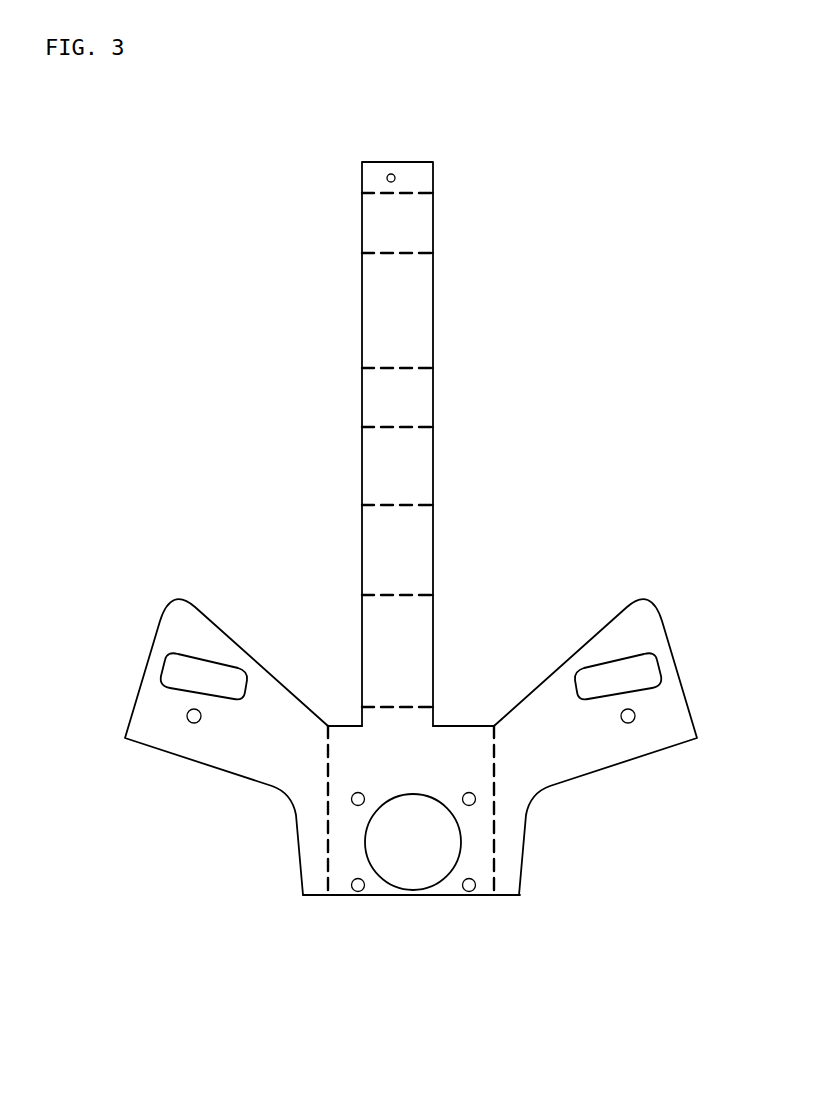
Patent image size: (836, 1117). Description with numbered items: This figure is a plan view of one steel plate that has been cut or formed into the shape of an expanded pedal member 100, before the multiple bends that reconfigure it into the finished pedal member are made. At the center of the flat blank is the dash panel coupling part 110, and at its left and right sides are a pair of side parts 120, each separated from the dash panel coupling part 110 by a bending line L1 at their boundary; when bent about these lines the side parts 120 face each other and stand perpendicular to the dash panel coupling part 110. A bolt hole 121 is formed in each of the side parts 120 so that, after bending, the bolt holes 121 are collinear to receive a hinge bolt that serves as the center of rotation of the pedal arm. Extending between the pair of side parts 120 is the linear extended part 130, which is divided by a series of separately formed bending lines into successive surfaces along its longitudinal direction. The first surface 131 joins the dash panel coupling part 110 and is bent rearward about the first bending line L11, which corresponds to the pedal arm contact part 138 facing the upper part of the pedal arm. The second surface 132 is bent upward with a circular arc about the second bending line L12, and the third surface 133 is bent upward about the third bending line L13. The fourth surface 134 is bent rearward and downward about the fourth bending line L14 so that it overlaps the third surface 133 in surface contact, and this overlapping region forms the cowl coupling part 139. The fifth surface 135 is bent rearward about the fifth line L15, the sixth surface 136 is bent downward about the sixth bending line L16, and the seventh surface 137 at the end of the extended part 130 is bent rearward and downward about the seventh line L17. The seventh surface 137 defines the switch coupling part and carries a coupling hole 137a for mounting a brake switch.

The pedal member 100 is at (238, 840).
The dash panel coupling part 110 is at (368, 897).
The side parts 120 is at (222, 752).
The bolt holes 121 is at (187, 713).
The extended part 130 is at (455, 265).
The first surface 131 is at (423, 635).
The second surface 132 is at (423, 552).
The third surface 133 is at (423, 472).
The fourth surface 134 is at (423, 400).
The fifth surface 135 is at (423, 320).
The sixth surface 136 is at (423, 226).
The seventh surface 137 is at (423, 178).
The coupling hole 137a is at (393, 171).
The pedal arm contact part 138 is at (336, 557).
The cowl coupling part 139 is at (532, 395).
The bending lines L1 is at (327, 872).
The first bending line L11 is at (382, 707).
The second bending line L12 is at (382, 595).
The third bending line L13 is at (380, 505).
The fourth bending line L14 is at (380, 427).
The fifth line L15 is at (380, 368).
The sixth bending line L16 is at (380, 253).
The seventh line L17 is at (380, 193).